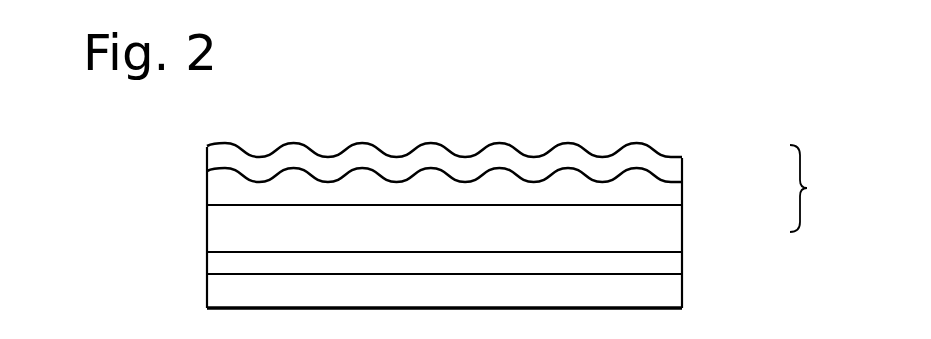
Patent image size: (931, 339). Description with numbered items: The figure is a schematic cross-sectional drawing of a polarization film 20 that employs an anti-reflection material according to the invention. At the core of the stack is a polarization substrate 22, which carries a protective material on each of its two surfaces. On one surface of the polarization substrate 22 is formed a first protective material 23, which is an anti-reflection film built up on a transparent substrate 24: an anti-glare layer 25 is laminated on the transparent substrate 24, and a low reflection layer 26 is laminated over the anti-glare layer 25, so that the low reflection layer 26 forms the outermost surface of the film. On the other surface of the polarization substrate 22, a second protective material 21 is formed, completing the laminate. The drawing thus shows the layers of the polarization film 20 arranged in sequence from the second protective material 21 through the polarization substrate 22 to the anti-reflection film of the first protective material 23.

The polarization film 20 is at (172, 193).
The second protective material 21 is at (682, 290).
The polarization substrate 22 is at (682, 265).
The first protective material 23 is at (821, 188).
The transparent substrate 24 is at (682, 232).
The anti-glare layer 25 is at (682, 196).
The low reflection layer 26 is at (682, 160).